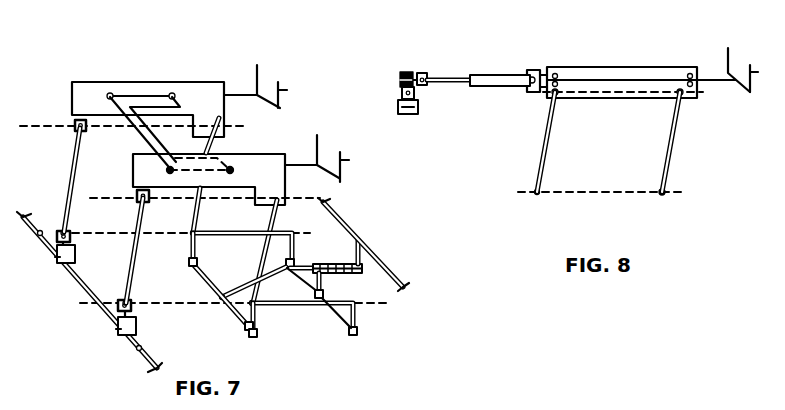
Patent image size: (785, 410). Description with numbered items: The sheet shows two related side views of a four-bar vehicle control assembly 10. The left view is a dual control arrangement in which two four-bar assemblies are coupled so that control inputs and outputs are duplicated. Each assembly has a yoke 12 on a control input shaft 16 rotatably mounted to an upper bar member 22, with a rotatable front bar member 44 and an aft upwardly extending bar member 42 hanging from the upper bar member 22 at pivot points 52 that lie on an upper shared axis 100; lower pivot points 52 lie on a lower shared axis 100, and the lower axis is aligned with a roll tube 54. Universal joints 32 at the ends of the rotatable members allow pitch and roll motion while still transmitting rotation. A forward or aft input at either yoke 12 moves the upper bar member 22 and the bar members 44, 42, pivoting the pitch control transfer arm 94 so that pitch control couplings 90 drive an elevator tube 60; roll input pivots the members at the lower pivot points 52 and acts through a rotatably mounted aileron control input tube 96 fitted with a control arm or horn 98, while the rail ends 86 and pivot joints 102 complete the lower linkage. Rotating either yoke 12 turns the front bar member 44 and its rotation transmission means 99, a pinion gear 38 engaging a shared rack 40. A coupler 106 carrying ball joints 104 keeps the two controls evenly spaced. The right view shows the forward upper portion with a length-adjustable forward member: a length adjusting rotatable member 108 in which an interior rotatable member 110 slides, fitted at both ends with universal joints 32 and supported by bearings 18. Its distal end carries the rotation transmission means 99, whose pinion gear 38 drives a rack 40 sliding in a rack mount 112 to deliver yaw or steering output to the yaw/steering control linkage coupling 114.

In FIG. 7, the load handling apparatus 10 is at (53, 57).
In FIG. 8, the load handling apparatus 10 is at (474, 161).
In FIG. 7, the yoke 12 is at (322, 136).
In FIG. 8, the yoke 12 is at (763, 78).
In FIG. 7, the control input shaft 16 is at (238, 94).
In FIG. 8, the control input shaft 16 is at (710, 81).
In FIG. 8, the bearings 18 is at (556, 73).
In FIG. 7, the upper bar member 22 is at (89, 81).
In FIG. 8, the upper bar member 22 is at (648, 66).
In FIG. 7, the universal joint 32 is at (75, 120).
In FIG. 8, the universal joint 32 is at (425, 88).
In FIG. 7, the pinion gear 38 is at (58, 259).
In FIG. 8, the pinion gear 38 is at (407, 70).
In FIG. 7, the rack 40 is at (82, 290).
In FIG. 8, the rack 40 is at (420, 93).
In FIG. 7, the aft upwardly extending bar member 42 is at (199, 216).
In FIG. 8, the aft upwardly extending bar member 42 is at (672, 148).
In FIG. 7, the front bar member 44 is at (68, 190).
In FIG. 8, the front bar member 44 is at (543, 157).
In FIG. 7, the pivot points 52 is at (84, 131).
In FIG. 8, the pivot points 52 is at (560, 97).
In FIG. 7, the roll tube 54 is at (362, 276).
In FIG. 7, the elevator tube 60 is at (304, 265).
In FIG. 7, the rail end stop 86 is at (38, 236).
In FIG. 7, the pitch control couplings 90 is at (195, 262).
In FIG. 7, the pitch control transfer arm 94 is at (188, 252).
In FIG. 7, the aileron control input tube 96 is at (238, 240).
In FIG. 7, the control arm or horn 98 is at (325, 289).
In FIG. 7, the rotation transmission means 99 is at (75, 256).
In FIG. 8, the rotation transmission means 99 is at (404, 96).
In FIG. 7, the shared axis 100 is at (48, 127).
In FIG. 8, the shared axis 100 is at (630, 94).
In FIG. 7, the pivot joint 102 is at (295, 256).
In FIG. 7, the ball joints 104 is at (110, 92).
In FIG. 7, the coupler 106 is at (143, 137).
In FIG. 8, the length adjusting rotatable member 108 is at (477, 87).
In FIG. 8, the interior rotatable member 110 is at (447, 77).
In FIG. 8, the rack mount 112 is at (406, 114).
In FIG. 8, the yaw/steering control linkage coupling 114 is at (403, 92).